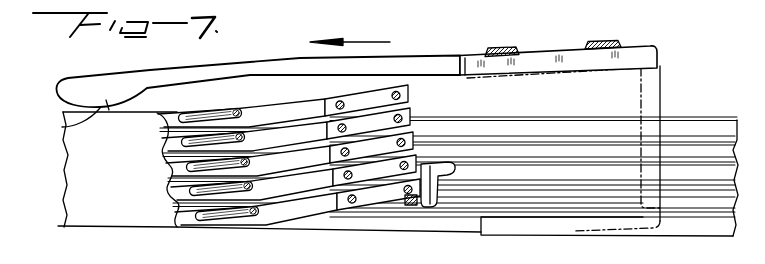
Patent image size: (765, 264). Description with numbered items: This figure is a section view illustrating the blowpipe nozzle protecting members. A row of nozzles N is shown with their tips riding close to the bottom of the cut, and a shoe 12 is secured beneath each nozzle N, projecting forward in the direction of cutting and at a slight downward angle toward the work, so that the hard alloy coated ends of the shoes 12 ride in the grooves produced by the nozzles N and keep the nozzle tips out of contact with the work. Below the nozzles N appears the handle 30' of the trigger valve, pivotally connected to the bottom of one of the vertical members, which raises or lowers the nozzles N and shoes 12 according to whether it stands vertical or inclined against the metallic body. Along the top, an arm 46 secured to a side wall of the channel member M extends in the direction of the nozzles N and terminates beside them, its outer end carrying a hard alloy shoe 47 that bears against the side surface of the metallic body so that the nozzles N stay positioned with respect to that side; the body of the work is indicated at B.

The shoe 12 is at (291, 150).
The handle 30' is at (416, 207).
The arm 46 is at (398, 62).
The shoe 47 is at (62, 127).
The cable bundle body B is at (553, 127).
The channel member M is at (660, 105).
The nozzle N is at (182, 197).